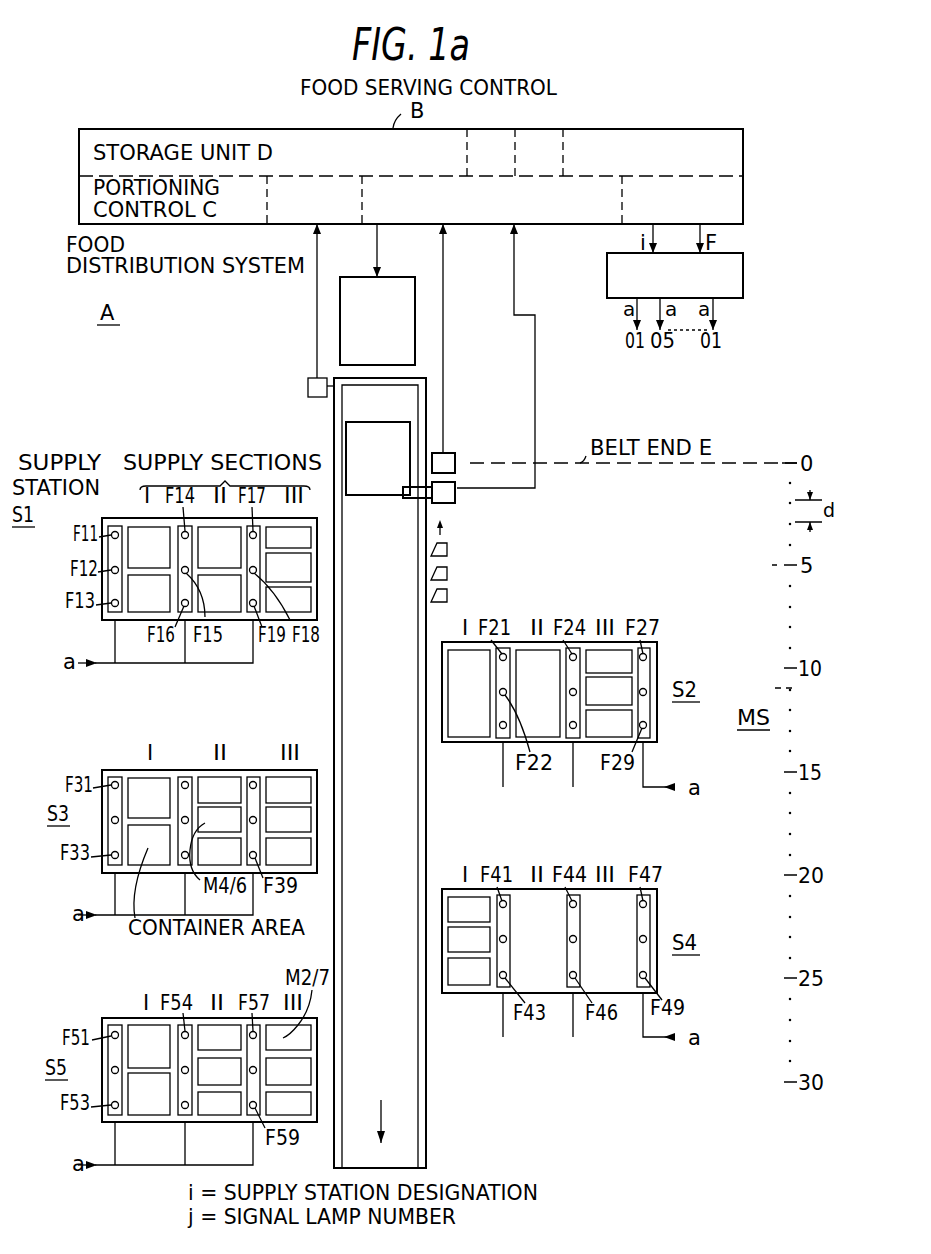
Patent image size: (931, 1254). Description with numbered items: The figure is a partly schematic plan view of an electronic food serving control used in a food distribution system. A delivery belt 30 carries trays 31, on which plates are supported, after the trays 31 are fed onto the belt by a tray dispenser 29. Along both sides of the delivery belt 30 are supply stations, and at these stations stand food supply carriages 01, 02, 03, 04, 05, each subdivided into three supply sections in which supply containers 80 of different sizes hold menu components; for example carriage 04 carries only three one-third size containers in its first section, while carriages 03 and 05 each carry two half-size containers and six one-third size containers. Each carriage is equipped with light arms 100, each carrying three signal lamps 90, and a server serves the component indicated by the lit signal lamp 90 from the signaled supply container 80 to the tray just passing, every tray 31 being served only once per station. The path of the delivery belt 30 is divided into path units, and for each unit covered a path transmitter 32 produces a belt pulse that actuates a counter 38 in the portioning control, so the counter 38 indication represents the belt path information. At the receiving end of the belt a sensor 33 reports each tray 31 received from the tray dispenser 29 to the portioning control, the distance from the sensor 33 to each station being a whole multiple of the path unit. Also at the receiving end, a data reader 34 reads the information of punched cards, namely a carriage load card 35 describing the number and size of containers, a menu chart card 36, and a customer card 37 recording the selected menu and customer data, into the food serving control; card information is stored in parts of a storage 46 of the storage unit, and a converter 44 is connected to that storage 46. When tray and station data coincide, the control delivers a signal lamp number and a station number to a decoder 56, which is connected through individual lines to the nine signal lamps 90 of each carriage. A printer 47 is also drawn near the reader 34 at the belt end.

The food supply carriage 01 is at (165, 554).
The food supply carriage 02 is at (573, 722).
The food supply carriage 03 is at (102, 772).
The food supply carriage 04 is at (657, 892).
The food supply carriage 05 is at (102, 1020).
The tray dispenser 29 is at (340, 316).
The delivery belt 30 is at (408, 1083).
The tray 31 is at (351, 432).
The path transmitter 32 is at (308, 385).
The sensor 33 is at (440, 452).
The data reader 34 is at (452, 490).
The carriage load card 35 is at (588, 551).
The menu chart card 36 is at (575, 575).
The customer card 37 is at (565, 597).
The counter 38 is at (314, 200).
The converter 44 is at (681, 199).
The storage 46 is at (564, 163).
The printer 47 is at (456, 492).
The decoder 56 is at (675, 275).
The supply container 80 is at (452, 735).
The signal lamp 90 is at (185, 781).
The light arm 100 is at (118, 620).